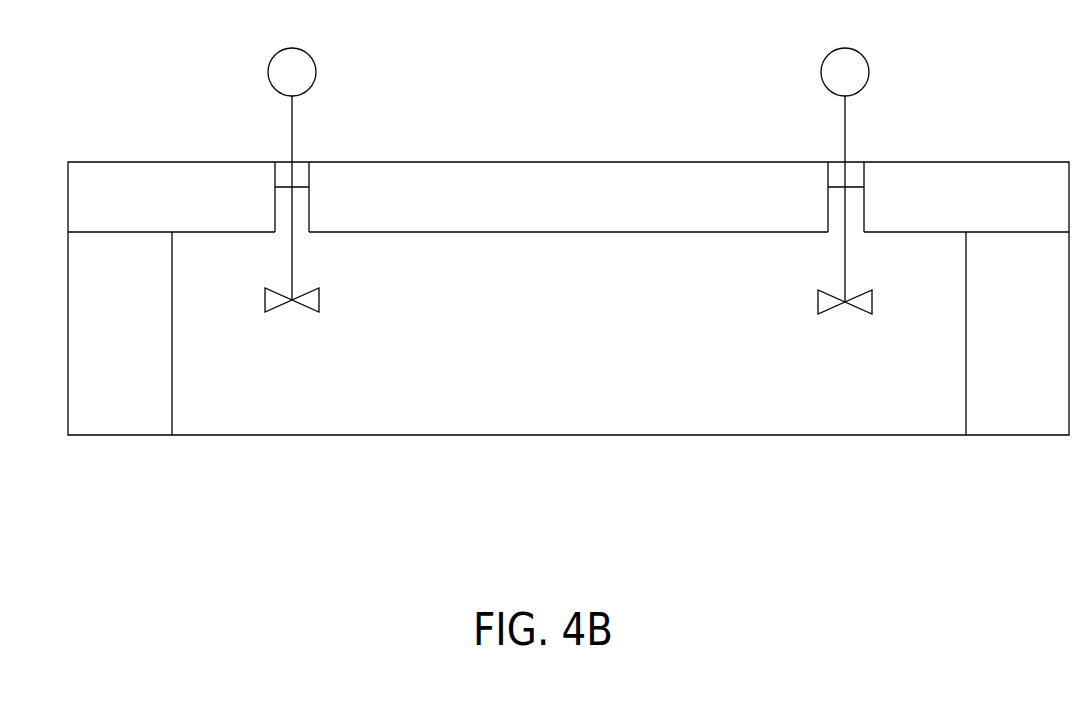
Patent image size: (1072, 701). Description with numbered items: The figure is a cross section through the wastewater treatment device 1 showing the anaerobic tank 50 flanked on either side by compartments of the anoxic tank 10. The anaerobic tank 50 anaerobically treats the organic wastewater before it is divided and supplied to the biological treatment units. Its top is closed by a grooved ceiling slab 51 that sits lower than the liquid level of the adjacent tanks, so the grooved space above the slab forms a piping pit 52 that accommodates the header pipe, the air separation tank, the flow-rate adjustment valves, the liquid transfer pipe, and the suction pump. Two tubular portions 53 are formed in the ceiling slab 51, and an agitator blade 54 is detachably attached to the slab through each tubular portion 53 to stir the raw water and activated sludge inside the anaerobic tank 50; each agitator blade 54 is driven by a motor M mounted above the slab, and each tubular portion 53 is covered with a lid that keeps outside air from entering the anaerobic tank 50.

The wastewater treatment device 1 is at (486, 122).
The anoxic tank 10 is at (82, 377).
The anaerobic tank 50 is at (539, 377).
The ceiling slab 51 is at (127, 237).
The piping pit 52 is at (157, 178).
The tubular portion 53 is at (318, 172).
The agitator blade 54 is at (305, 310).